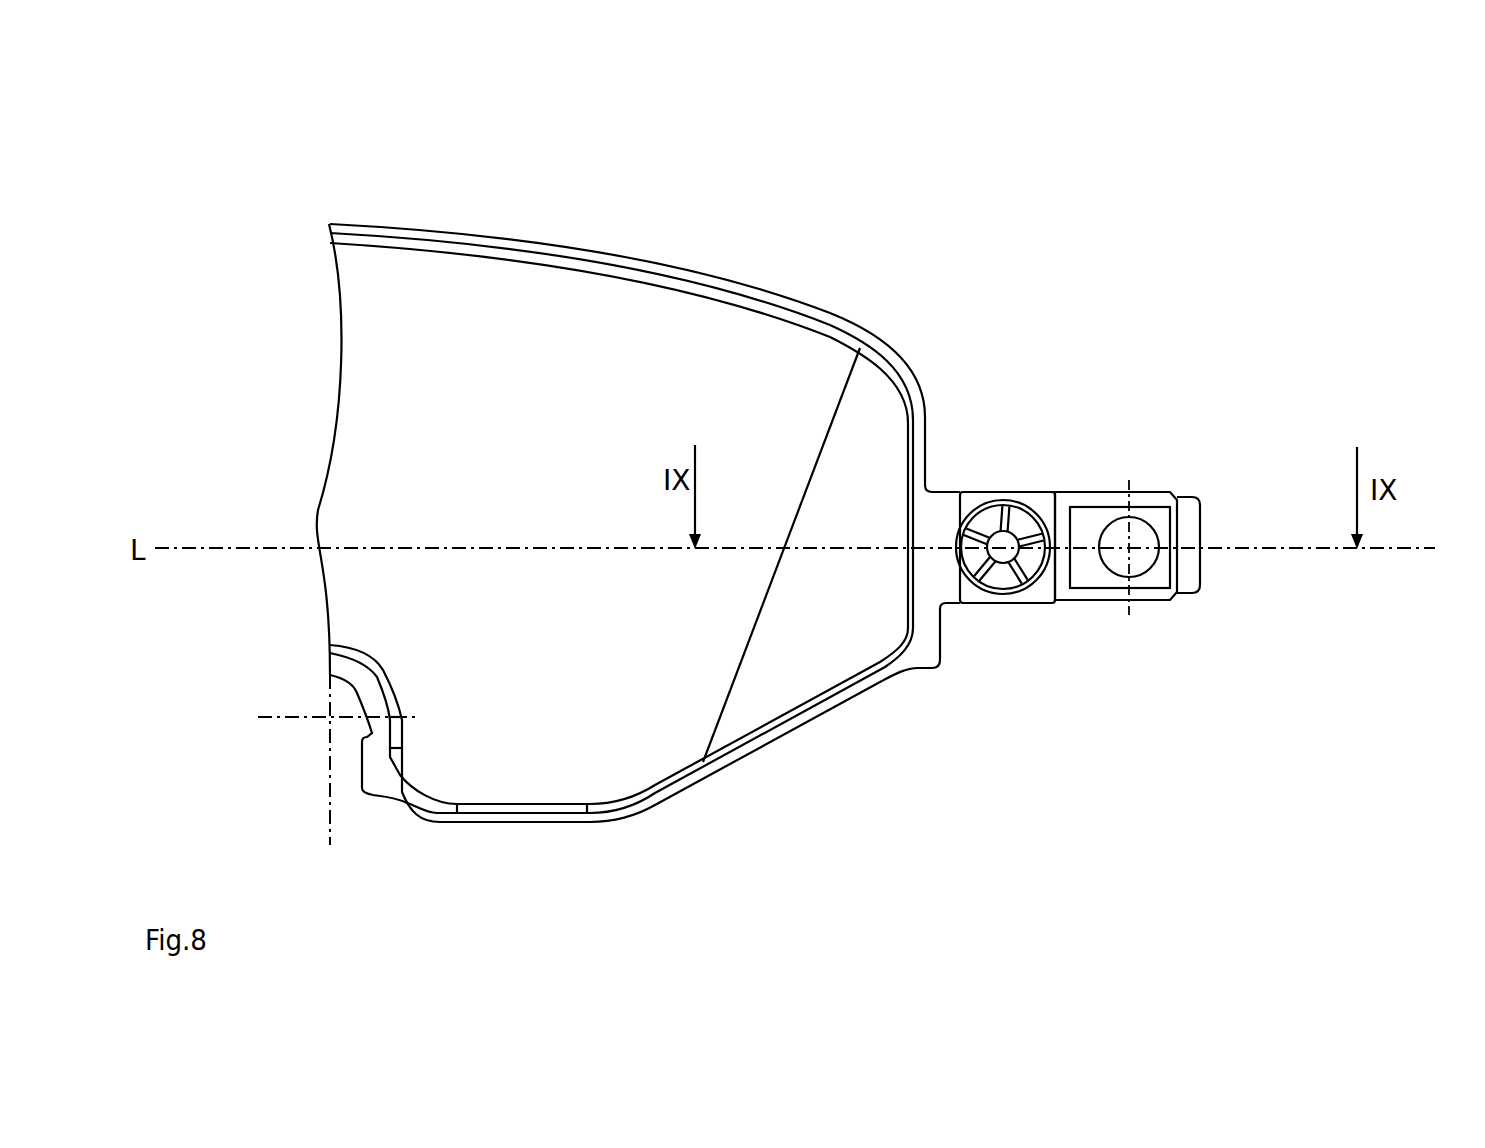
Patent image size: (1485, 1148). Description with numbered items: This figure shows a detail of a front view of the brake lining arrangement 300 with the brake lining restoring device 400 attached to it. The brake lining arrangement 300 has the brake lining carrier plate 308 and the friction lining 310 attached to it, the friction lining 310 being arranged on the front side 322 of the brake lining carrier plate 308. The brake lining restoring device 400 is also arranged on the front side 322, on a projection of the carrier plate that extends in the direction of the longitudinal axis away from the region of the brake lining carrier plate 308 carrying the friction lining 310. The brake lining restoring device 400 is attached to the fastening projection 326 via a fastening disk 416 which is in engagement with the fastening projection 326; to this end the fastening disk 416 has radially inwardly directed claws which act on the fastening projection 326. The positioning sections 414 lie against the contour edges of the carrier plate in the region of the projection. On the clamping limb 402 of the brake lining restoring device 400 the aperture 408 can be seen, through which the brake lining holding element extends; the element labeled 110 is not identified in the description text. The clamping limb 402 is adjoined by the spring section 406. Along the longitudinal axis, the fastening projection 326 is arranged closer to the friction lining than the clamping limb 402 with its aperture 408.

The brake lining arrangement 300 is at (866, 148).
The brake lining carrier plate 308 is at (722, 365).
The friction lining 310 is at (890, 348).
The front side 322 is at (927, 650).
The fastening projection 326 is at (1000, 535).
The brake lining restoring device 400 is at (1111, 450).
The clamping limb 402 is at (1100, 580).
The spring section 406 is at (1197, 525).
The aperture 408 is at (1148, 576).
The positioning sections 414 is at (1033, 492).
The fastening disk 416 is at (992, 585).
The shaft 110 is at (1135, 550).